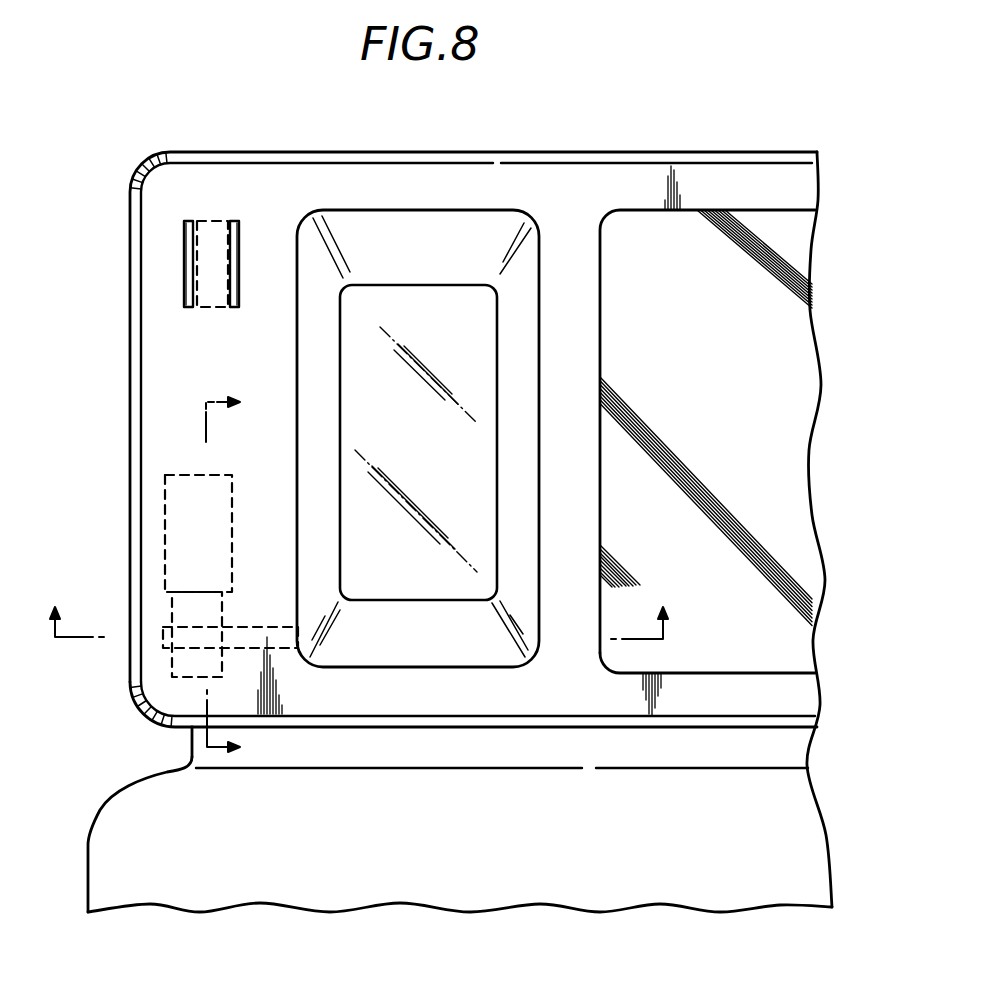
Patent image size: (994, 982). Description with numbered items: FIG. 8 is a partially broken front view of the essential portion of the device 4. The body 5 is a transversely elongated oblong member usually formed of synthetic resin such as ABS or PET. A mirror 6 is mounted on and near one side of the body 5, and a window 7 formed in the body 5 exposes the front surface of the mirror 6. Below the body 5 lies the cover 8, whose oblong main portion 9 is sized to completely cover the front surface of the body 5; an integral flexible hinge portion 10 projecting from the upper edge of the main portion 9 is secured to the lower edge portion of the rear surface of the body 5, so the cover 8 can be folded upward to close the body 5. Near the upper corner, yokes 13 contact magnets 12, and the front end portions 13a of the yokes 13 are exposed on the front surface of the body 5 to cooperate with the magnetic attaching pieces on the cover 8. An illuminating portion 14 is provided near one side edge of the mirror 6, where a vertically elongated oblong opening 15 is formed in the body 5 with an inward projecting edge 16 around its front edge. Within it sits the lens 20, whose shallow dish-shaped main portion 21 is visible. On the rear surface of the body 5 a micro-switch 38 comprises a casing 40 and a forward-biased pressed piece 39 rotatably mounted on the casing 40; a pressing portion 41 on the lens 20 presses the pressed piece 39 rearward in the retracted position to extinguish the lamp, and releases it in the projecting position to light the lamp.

The display unit 4 is at (618, 118).
The body 5 is at (525, 152).
The mirror 6 is at (767, 458).
The window 7 is at (758, 210).
The cover 8 is at (100, 806).
The main portion 9 is at (113, 850).
The flexible hinge portion 10 is at (192, 745).
The magnet 12 is at (208, 221).
The yoke 13 is at (236, 221).
The front end portion of yoke 13a is at (236, 250).
The illuminating portion 14 is at (524, 358).
The opening 15 is at (540, 486).
The inward projecting edge 16 is at (538, 409).
The lens 20 is at (423, 307).
The main portion of lens 21 is at (397, 287).
The micro-switch 38 is at (165, 490).
The pressed piece 39 is at (172, 659).
The casing 40 is at (165, 521).
The pressing portion 41 is at (250, 627).